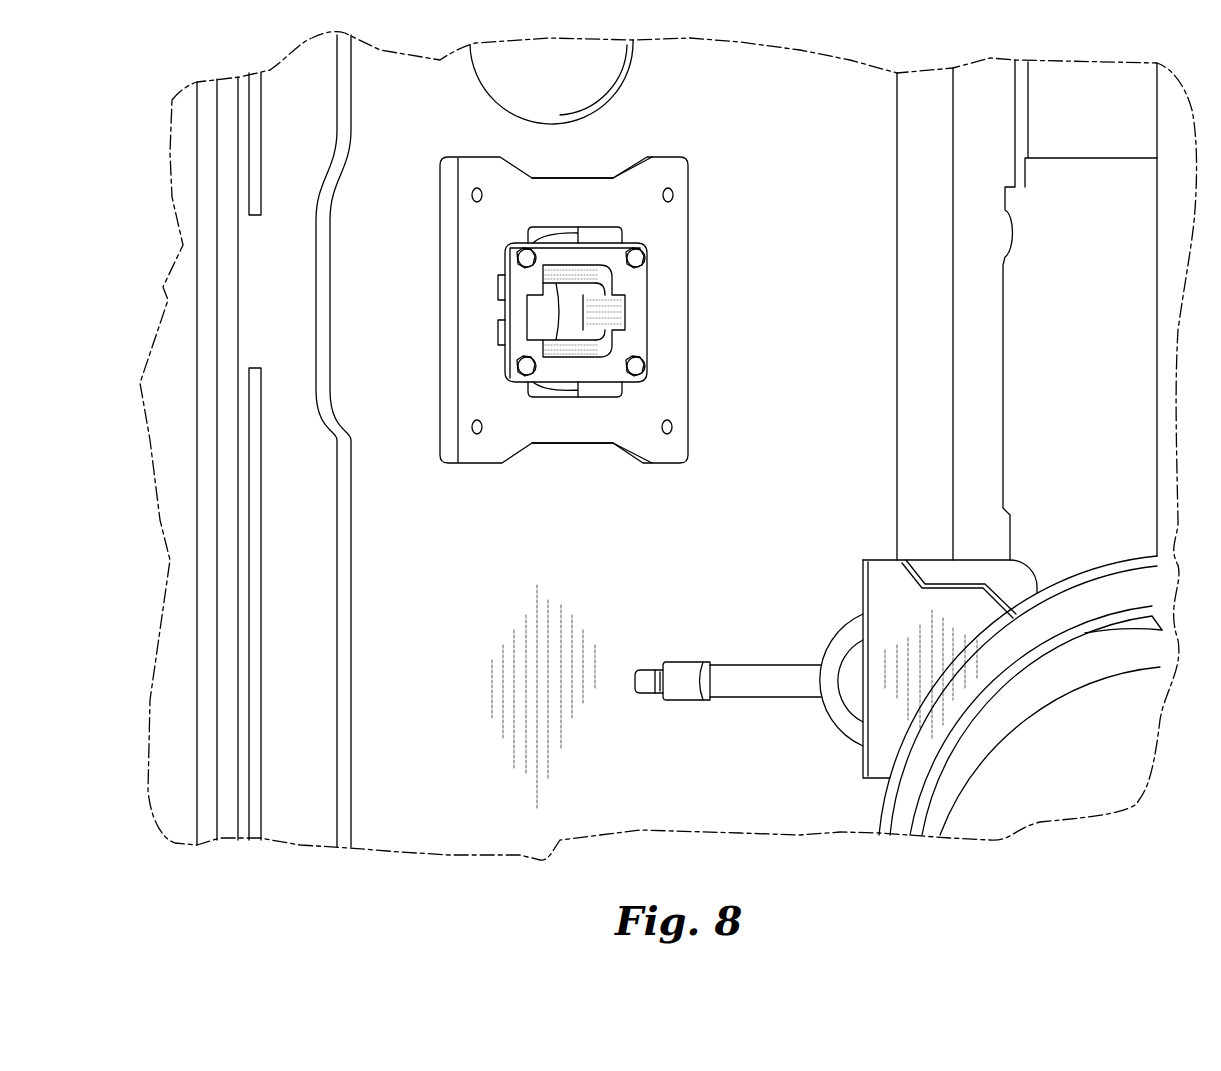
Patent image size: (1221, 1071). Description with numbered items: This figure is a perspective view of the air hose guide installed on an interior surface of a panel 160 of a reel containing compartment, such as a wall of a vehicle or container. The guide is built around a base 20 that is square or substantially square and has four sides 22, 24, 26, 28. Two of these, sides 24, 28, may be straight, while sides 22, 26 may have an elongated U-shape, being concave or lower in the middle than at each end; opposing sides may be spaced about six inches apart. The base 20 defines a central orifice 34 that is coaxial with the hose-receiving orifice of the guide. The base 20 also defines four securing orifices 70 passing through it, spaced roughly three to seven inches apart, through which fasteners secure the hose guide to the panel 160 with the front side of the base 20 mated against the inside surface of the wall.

The base 20 is at (660, 252).
The side 22 is at (583, 170).
The side 24 is at (450, 297).
The side 26 is at (550, 448).
The side 28 is at (690, 340).
The orifice 34 is at (549, 222).
The securing orifices 70 is at (472, 193).
The panel 160 is at (452, 757).